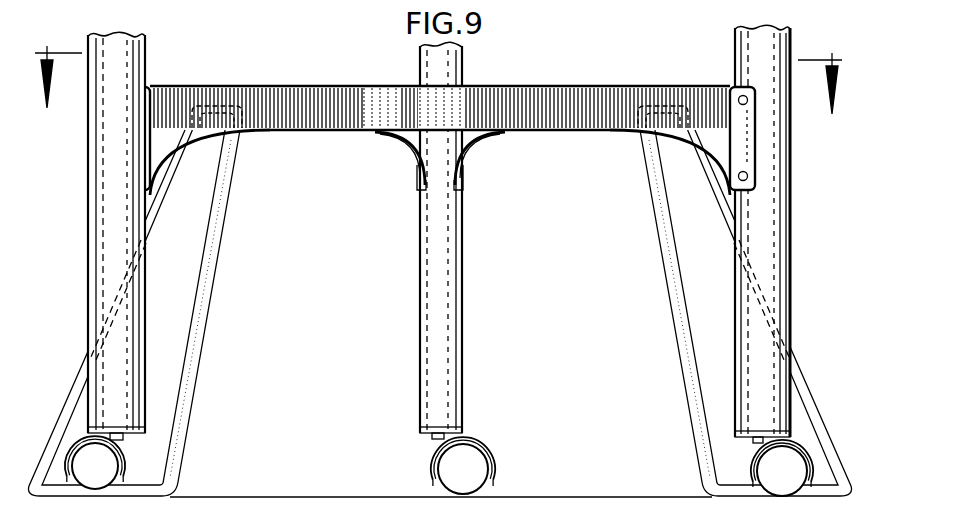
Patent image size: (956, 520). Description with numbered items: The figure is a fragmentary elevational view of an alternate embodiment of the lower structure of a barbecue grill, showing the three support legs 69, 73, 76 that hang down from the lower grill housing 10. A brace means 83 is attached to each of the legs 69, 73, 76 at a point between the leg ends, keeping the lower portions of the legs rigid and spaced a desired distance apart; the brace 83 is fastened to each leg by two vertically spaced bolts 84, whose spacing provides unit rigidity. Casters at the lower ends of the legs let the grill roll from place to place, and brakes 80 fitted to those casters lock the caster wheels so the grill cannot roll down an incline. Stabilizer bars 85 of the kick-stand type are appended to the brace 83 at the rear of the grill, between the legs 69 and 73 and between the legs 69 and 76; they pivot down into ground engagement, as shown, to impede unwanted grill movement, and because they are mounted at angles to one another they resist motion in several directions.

The lower grill housing 10 is at (441, 68).
The support leg 69 is at (437, 311).
The support leg 73 is at (762, 322).
The support leg 76 is at (110, 231).
The brakes 80 is at (63, 462).
The brace means 83 is at (318, 84).
The bolts 84 is at (740, 105).
The stabilizer bars 85 is at (193, 365).